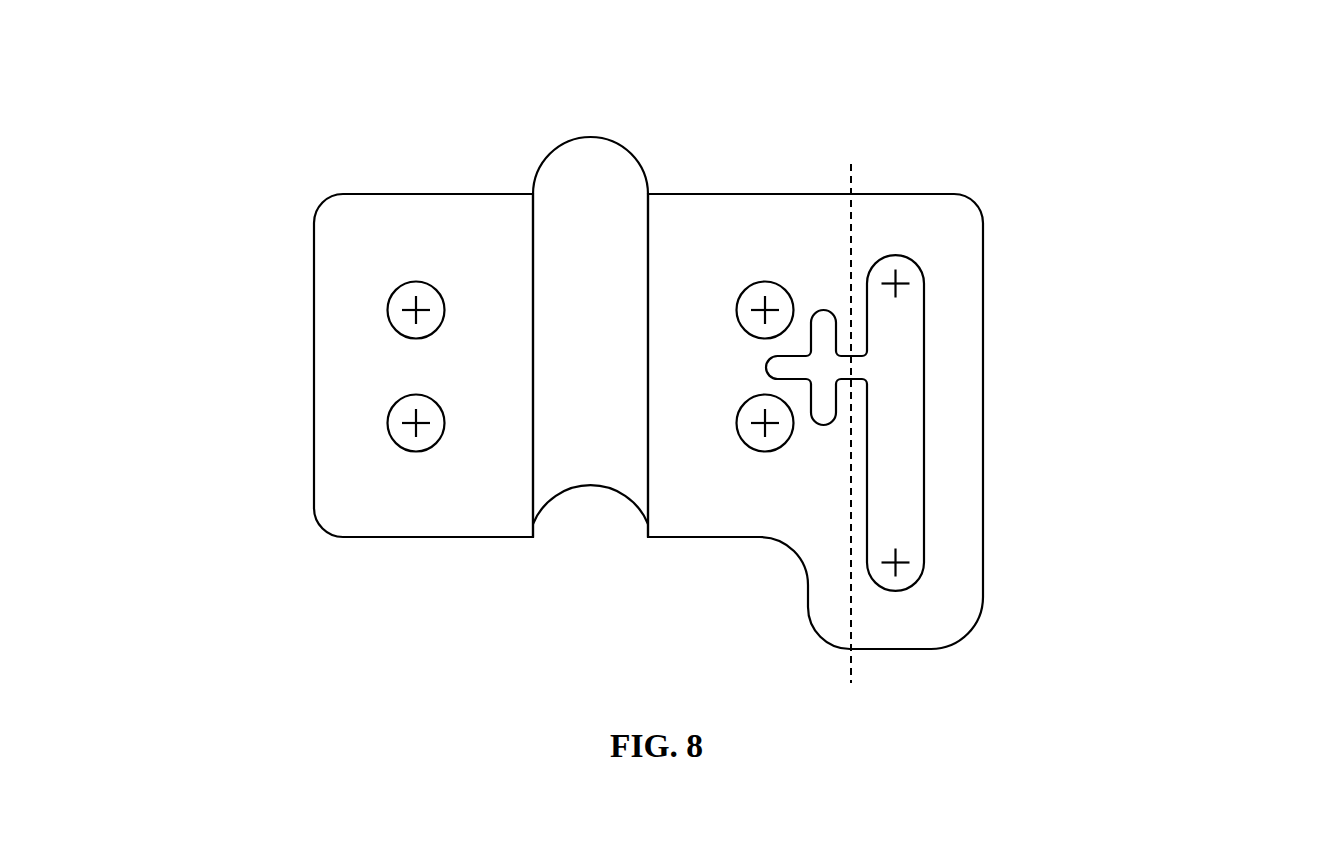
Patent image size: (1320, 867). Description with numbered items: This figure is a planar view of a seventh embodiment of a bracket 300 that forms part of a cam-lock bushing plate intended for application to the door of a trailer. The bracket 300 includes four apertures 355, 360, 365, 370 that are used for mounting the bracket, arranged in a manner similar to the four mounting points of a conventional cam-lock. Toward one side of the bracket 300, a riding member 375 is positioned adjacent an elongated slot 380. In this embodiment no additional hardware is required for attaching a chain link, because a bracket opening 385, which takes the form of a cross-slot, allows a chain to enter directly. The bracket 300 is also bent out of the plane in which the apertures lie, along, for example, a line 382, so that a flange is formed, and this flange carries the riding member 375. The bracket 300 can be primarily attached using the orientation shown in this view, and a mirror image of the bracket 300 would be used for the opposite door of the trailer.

The bracket 300 is at (980, 629).
The aperture 355 is at (400, 415).
The aperture 360 is at (400, 301).
The aperture 365 is at (742, 293).
The aperture 370 is at (747, 441).
The riding member 375 is at (963, 459).
The elongated slot 380 is at (902, 310).
The line 382 is at (851, 665).
The bracket opening 385 is at (822, 323).